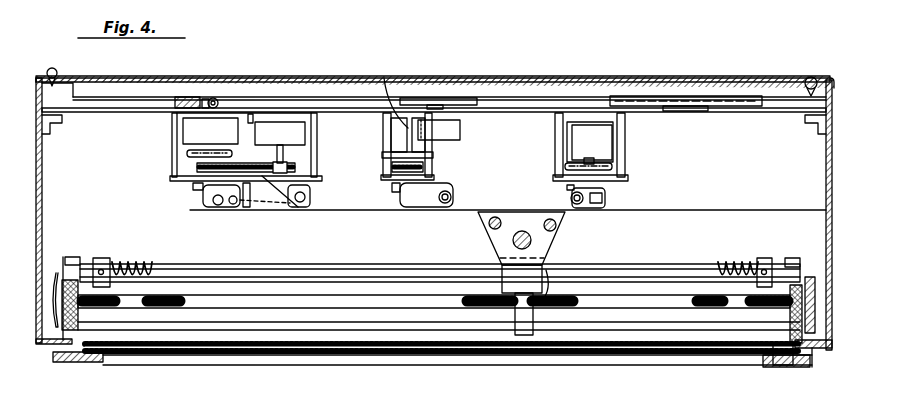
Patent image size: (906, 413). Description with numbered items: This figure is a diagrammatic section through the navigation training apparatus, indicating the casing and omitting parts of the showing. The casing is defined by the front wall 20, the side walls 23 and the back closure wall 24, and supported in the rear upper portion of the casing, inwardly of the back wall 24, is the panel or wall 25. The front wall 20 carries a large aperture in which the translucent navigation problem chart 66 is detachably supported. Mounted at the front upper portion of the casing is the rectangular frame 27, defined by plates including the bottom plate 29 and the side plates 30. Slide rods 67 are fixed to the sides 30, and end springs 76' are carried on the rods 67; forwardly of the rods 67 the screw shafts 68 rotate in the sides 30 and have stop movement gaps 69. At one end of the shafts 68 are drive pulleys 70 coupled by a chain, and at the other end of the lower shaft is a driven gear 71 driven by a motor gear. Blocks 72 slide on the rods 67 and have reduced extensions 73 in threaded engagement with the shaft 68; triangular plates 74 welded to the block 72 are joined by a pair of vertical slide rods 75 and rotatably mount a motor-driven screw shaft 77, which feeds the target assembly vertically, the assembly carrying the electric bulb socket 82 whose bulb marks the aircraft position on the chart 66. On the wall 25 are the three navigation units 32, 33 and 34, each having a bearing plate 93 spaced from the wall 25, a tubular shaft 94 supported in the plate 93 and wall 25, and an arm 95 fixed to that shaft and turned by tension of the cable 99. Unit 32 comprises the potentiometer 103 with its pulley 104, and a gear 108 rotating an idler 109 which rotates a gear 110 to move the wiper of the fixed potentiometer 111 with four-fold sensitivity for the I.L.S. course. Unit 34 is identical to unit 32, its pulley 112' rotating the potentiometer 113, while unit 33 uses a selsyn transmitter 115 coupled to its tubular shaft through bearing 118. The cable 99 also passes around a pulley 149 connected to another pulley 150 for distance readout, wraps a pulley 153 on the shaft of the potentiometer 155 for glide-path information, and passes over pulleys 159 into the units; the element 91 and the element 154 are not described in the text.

The front wall 20 is at (768, 360).
The side walls 23 is at (42, 202).
The back closure wall 24 is at (780, 80).
The panel or wall 25 is at (100, 108).
The rectangular frame 27 is at (193, 332).
The bottom plate 29 is at (345, 323).
The side plates 30 is at (60, 348).
The navigation unit 32 is at (172, 180).
The navigation unit 33 is at (385, 183).
The navigation unit 34 is at (628, 175).
The translucent navigation problem chart 66 is at (297, 353).
The slide rods 67 is at (251, 266).
The screw shafts 68 is at (192, 298).
The stop movement gaps 69 is at (140, 300).
The drive pulleys 70 is at (70, 257).
The driven gear 71 is at (806, 262).
The blocks 72 is at (508, 278).
The reduced extensions 73 is at (548, 298).
The triangular plates 74 is at (484, 228).
The vertical slide rods 75 is at (550, 219).
The end springs 76' is at (432, 257).
The screw shaft 77 is at (522, 231).
The electric bulb socket 82 is at (523, 336).
The housing block 91 is at (208, 152).
The bearing plate 93 is at (308, 183).
The tubular shafts 94 is at (587, 158).
The arms 95 is at (212, 197).
The cable 99 is at (324, 210).
The potentiometer 103 is at (183, 124).
The pulley 104 is at (190, 153).
The gear 108 is at (197, 166).
The idler 109 is at (262, 172).
The gear 110 is at (288, 164).
The potentiometer 111 is at (305, 133).
The pulley 112' is at (611, 147).
The potentiometer 113 is at (567, 132).
The selsyn transmitter 115 is at (395, 133).
The direct bearing 118 is at (392, 168).
The pulley 149 is at (640, 100).
The pulley 150 is at (705, 108).
The pulley 153 is at (452, 104).
The guide bar 154 is at (420, 100).
The potentiometer 155 is at (462, 129).
The pulleys 159 is at (215, 99).